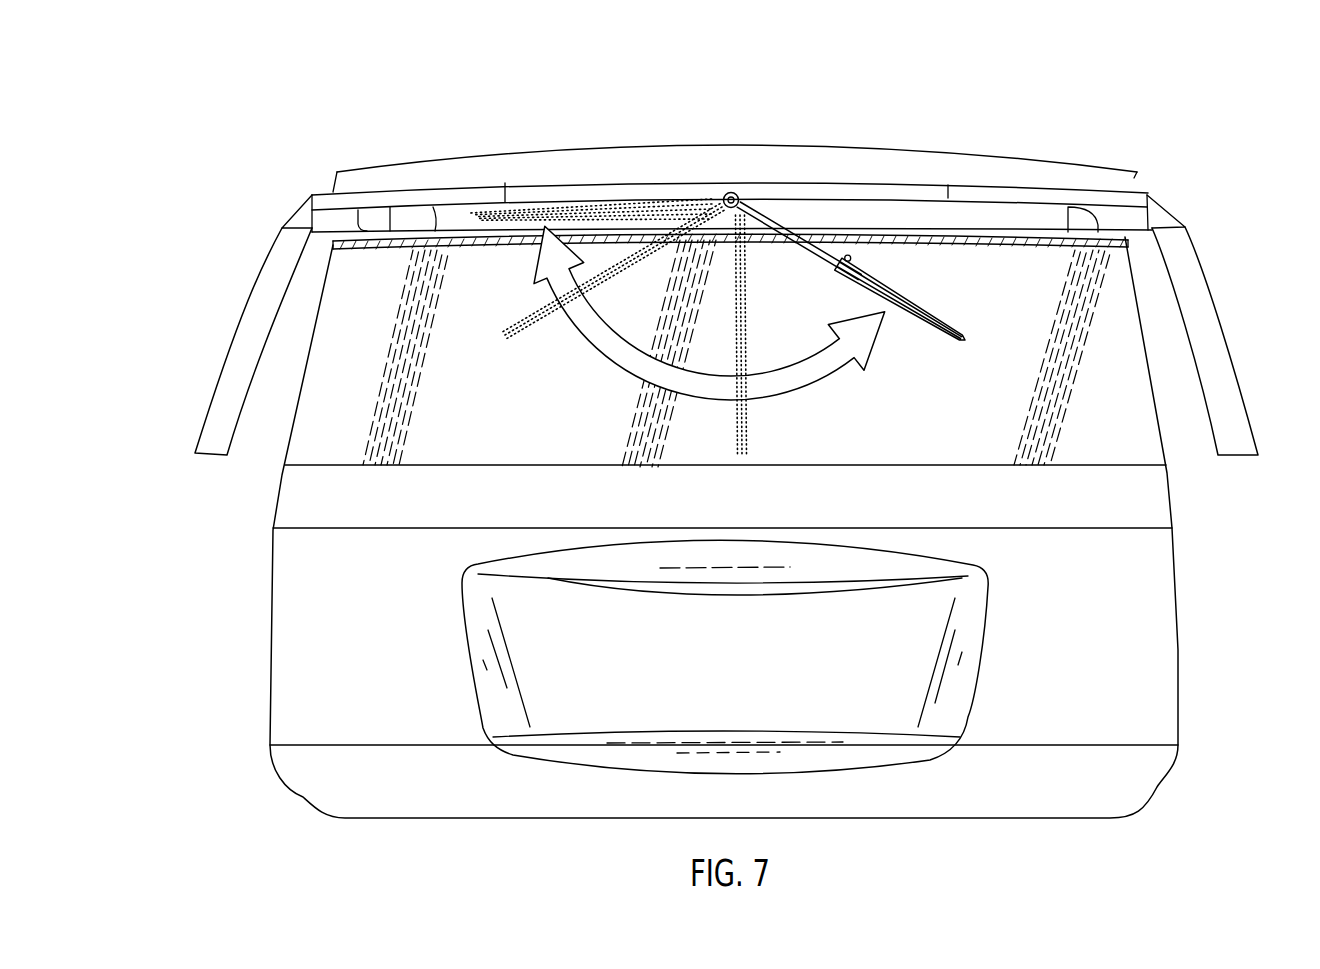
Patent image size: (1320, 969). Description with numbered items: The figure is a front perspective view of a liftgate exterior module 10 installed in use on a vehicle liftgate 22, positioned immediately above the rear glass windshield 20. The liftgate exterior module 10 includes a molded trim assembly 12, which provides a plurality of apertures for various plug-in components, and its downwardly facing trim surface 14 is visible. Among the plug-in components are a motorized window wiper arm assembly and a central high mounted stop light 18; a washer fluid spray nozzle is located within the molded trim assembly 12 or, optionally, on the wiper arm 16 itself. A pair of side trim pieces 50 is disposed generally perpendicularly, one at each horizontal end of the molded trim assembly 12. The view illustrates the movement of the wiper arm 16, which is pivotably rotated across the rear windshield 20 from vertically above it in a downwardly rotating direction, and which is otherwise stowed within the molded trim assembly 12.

The liftgate exterior module 10 is at (700, 112).
The molded trim assembly 12 is at (783, 146).
The downwardly facing trim surface 14 is at (412, 220).
The wiper arm 16 is at (857, 263).
The central high mounted stop light 18 is at (553, 192).
The rear glass windshield 20 is at (1122, 437).
The vehicle liftgate 22 is at (1132, 672).
The side trim pieces 50 is at (235, 358).